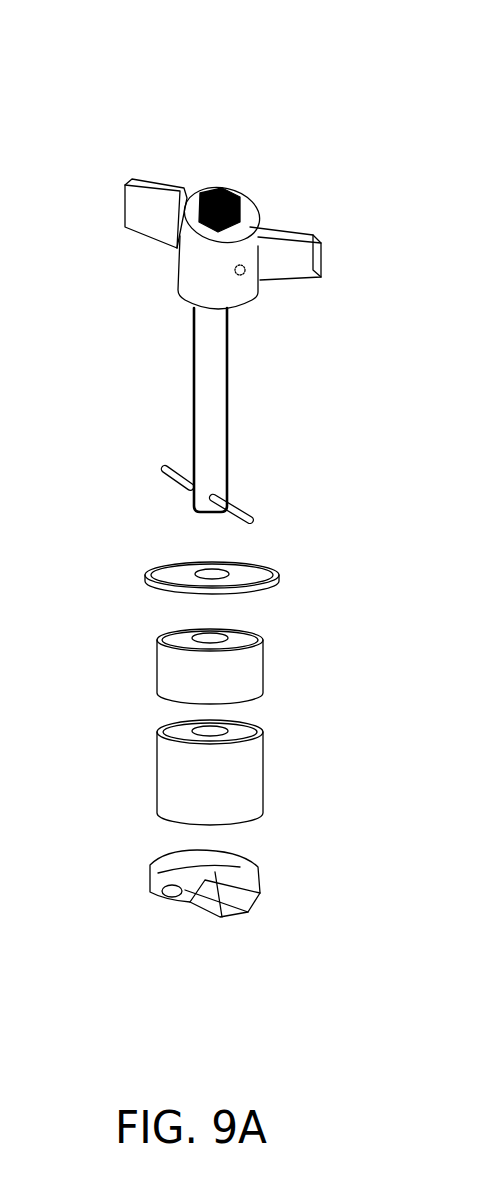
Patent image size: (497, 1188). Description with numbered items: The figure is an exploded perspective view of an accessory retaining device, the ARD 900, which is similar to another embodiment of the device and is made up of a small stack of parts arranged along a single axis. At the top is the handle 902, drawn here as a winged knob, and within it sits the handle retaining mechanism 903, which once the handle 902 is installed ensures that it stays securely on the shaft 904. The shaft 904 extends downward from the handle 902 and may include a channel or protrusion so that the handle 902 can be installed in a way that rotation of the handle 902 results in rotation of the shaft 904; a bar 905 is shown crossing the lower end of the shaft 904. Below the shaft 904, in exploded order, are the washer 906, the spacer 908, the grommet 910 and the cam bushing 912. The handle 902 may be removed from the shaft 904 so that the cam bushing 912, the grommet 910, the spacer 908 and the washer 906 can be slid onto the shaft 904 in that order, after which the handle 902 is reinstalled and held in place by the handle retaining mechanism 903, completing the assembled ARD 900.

The ARD 900 is at (166, 62).
The handle 902 is at (183, 190).
The handle retaining mechanism 903 is at (227, 193).
The shaft 904 is at (193, 390).
The bar 905 is at (160, 463).
The washer 906 is at (153, 567).
The spacer 908 is at (155, 645).
The grommet 910 is at (157, 738).
The cam bushing 912 is at (152, 867).